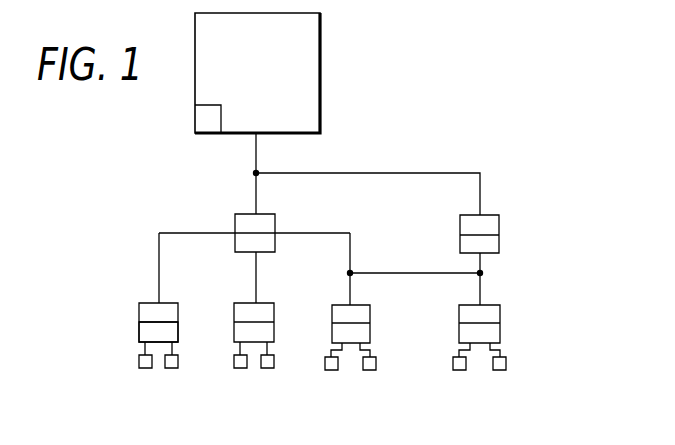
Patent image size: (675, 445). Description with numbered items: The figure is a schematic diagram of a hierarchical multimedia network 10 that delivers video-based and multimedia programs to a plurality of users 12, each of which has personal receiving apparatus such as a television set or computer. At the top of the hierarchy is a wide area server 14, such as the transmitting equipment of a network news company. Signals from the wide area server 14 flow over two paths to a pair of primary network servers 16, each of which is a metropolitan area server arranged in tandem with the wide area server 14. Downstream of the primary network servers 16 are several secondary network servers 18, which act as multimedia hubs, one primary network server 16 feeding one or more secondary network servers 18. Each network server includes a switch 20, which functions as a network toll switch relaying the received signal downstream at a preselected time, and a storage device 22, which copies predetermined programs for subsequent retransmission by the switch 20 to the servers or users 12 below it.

The hierarchical multimedia network 10 is at (478, 164).
The user 12 is at (172, 369).
The wide area server 14 is at (320, 98).
The primary network server 16 is at (277, 224).
The secondary network server 18 is at (459, 313).
The switch 20 is at (149, 309).
The storage device 22 is at (152, 331).